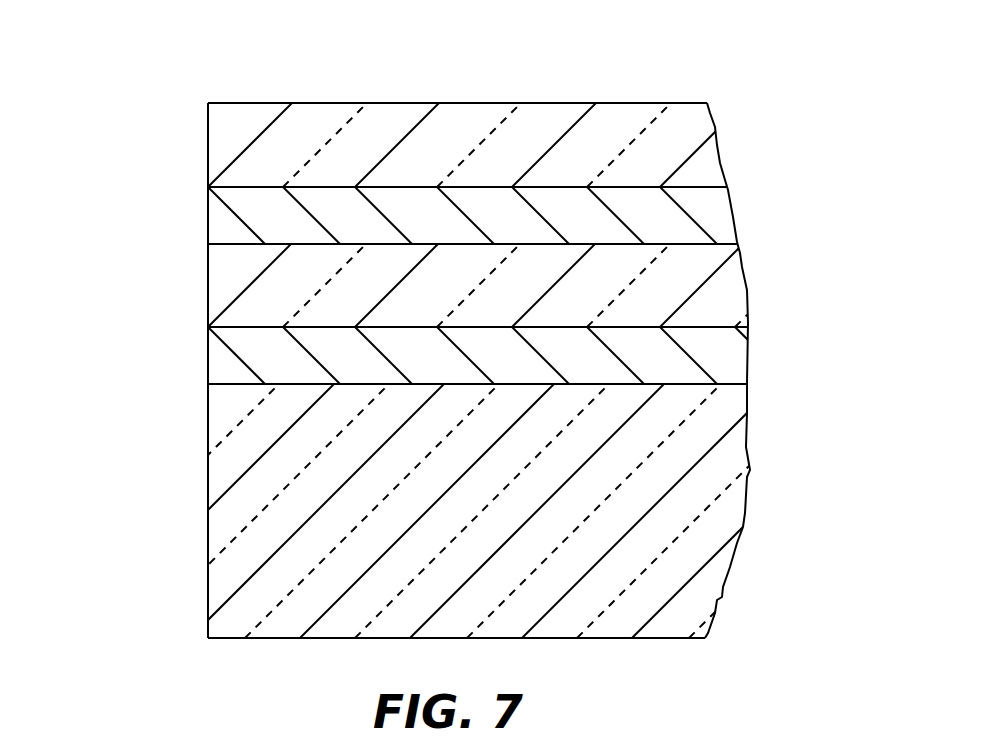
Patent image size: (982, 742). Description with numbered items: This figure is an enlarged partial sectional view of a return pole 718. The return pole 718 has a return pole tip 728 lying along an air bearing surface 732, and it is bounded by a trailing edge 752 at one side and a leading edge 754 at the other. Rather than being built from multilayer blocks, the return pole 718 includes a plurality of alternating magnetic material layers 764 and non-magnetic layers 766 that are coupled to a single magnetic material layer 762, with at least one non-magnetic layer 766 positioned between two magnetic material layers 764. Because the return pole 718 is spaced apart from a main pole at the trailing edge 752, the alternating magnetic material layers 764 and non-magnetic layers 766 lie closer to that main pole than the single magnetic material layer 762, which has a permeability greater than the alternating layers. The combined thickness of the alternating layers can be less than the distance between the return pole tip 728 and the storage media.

The return pole 718 is at (805, 148).
The trailing edge 752 is at (233, 103).
The leading edge 754 is at (233, 638).
The return pole tip 728 is at (207, 430).
The air bearing surface 732 is at (206, 542).
The magnetic material layers 764 is at (233, 134).
The non-magnetic layers 766 is at (238, 215).
The single magnetic material layer 762 is at (240, 485).